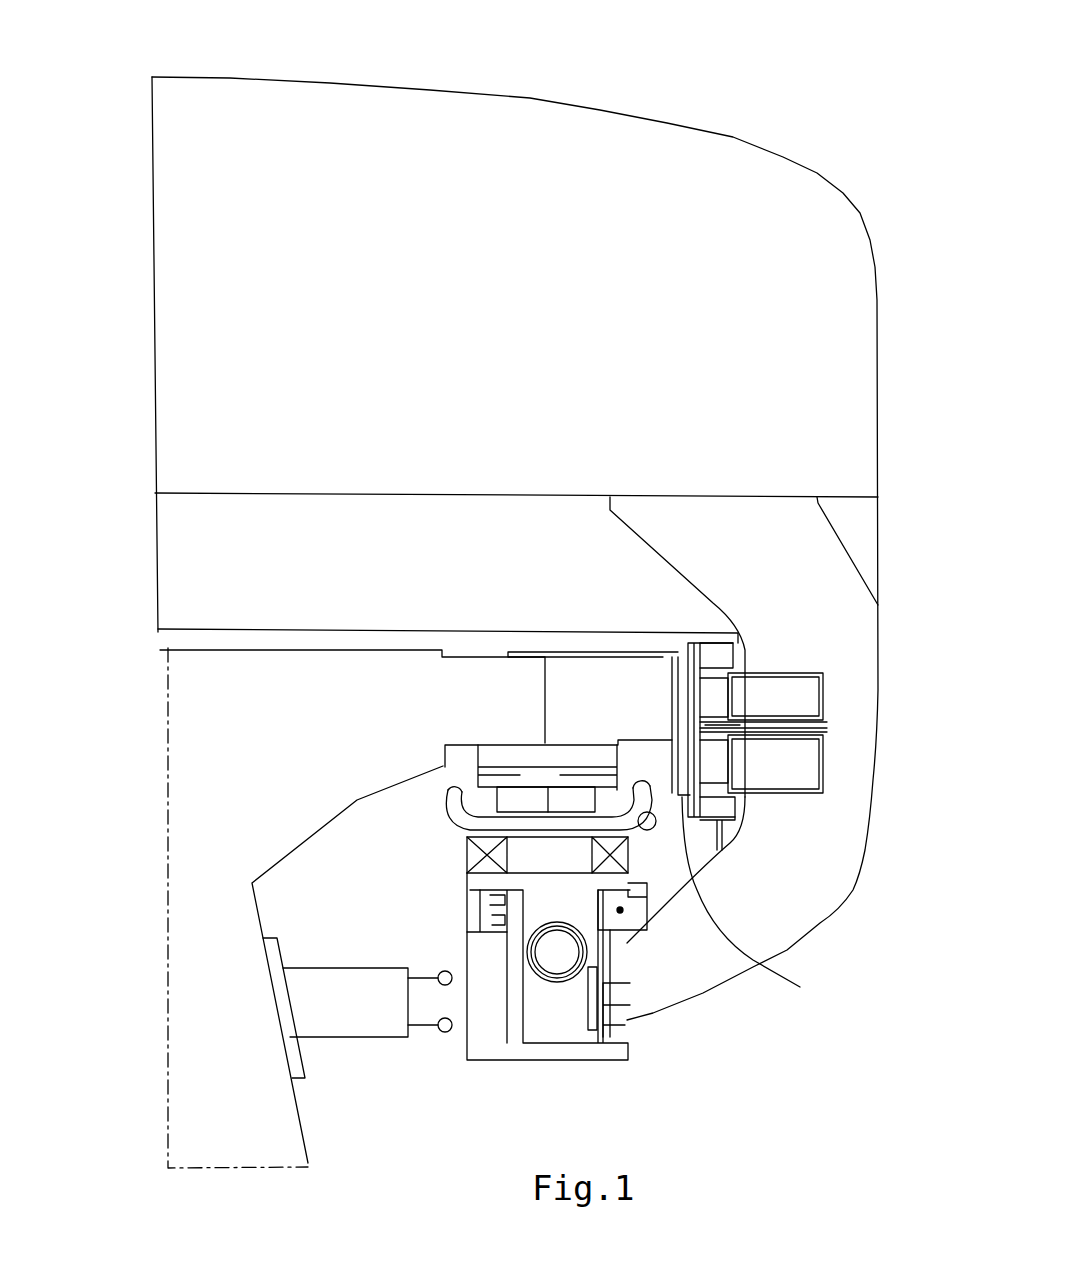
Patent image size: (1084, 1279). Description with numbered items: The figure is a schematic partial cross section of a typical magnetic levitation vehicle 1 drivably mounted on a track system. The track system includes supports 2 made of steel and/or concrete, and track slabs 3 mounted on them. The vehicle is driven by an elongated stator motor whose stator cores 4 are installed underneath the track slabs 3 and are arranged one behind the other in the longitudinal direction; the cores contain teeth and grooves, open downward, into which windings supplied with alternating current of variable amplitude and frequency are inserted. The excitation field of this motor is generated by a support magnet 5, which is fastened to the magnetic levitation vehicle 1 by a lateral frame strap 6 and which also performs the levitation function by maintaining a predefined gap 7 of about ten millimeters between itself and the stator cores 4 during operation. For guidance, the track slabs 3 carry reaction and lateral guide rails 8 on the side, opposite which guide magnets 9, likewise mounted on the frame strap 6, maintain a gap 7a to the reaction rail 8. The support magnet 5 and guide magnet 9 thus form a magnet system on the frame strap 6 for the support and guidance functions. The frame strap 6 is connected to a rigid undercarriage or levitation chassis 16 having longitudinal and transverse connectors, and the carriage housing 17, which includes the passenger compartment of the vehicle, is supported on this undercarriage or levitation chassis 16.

The magnetic levitation vehicle 1 is at (532, 91).
The support 2 is at (205, 1033).
The track slab 3 is at (638, 653).
The stator core 4 is at (528, 802).
The support magnet 5 is at (560, 858).
The frame strap 6 is at (812, 613).
The gap 7 is at (520, 833).
The gap 7a is at (742, 902).
The reaction and lateral guide rail 8 is at (684, 747).
The guide magnet 9 is at (738, 731).
The undercarriage or levitation chassis 16 is at (222, 576).
The carriage housing 17 is at (215, 297).